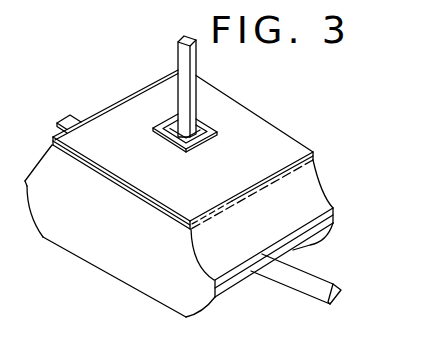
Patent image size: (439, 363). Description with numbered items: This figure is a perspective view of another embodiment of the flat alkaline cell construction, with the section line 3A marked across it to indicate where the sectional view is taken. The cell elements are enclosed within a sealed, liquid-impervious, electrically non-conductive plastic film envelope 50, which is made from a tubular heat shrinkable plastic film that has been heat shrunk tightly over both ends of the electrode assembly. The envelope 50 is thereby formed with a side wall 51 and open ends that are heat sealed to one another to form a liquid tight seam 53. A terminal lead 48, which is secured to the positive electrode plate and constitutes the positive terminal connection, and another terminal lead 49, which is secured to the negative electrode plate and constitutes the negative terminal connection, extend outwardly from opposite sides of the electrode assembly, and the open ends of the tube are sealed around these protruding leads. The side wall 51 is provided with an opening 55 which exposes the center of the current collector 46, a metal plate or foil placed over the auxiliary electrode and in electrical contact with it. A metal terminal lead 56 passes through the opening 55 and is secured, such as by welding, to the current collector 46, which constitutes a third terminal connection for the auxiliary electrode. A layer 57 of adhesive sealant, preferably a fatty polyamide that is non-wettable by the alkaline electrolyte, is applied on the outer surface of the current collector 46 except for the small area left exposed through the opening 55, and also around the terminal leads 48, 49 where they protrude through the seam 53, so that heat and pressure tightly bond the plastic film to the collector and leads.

The current collector 46 is at (186, 145).
The terminal lead 48 is at (317, 272).
The terminal lead 49 is at (78, 120).
The plastic film envelope 50 is at (135, 266).
The side wall 51 is at (277, 137).
The liquid tight seam 53 is at (341, 203).
The opening 55 is at (198, 142).
The metal terminal lead 56 is at (196, 57).
The layer of adhesive sealant 57 is at (167, 140).
The section line 3A is at (70, 102).